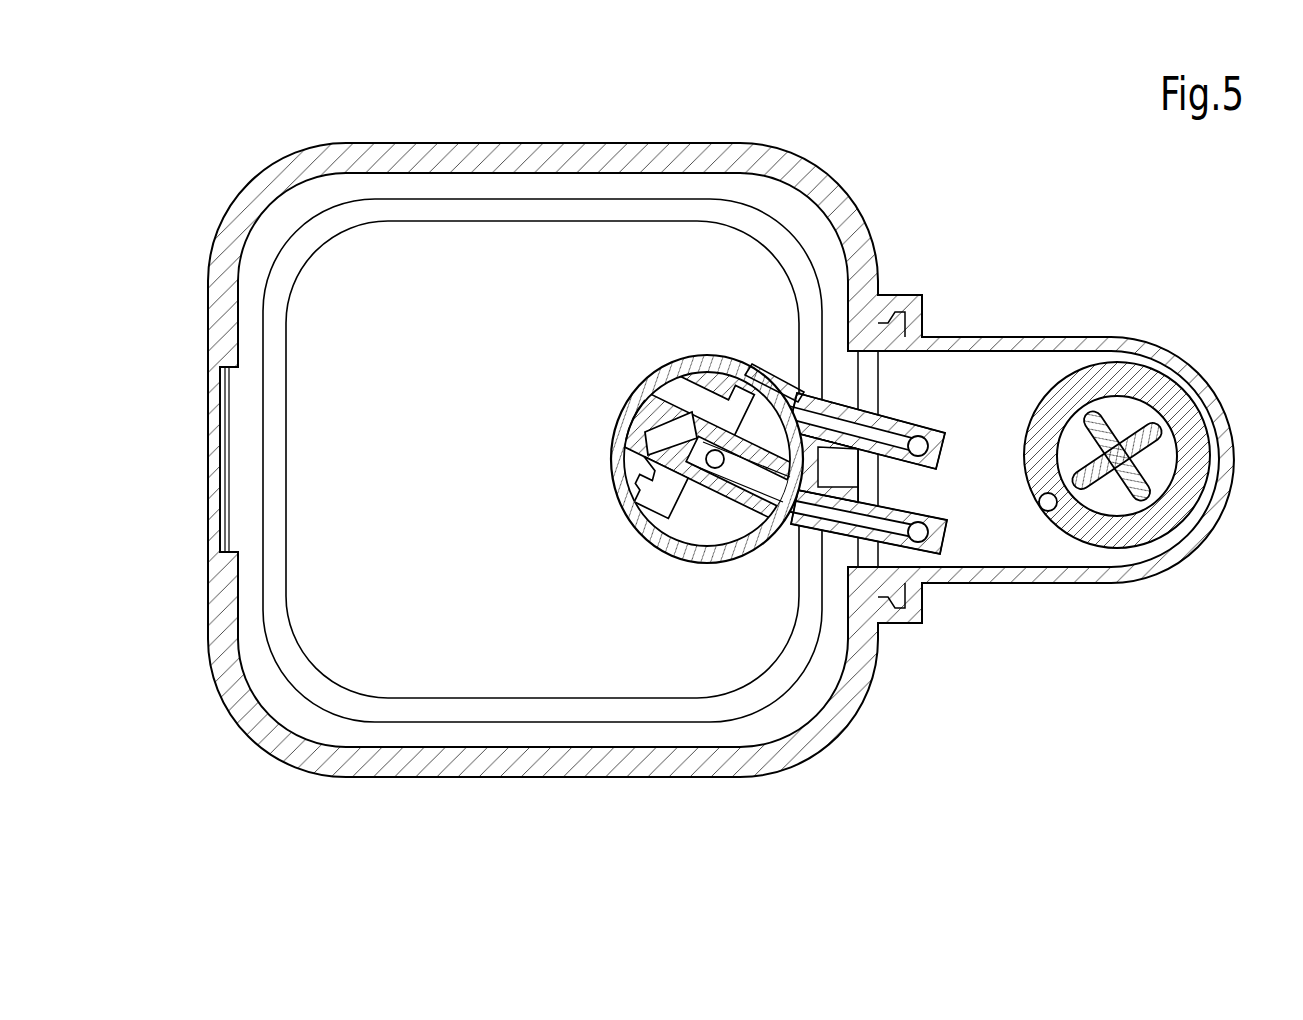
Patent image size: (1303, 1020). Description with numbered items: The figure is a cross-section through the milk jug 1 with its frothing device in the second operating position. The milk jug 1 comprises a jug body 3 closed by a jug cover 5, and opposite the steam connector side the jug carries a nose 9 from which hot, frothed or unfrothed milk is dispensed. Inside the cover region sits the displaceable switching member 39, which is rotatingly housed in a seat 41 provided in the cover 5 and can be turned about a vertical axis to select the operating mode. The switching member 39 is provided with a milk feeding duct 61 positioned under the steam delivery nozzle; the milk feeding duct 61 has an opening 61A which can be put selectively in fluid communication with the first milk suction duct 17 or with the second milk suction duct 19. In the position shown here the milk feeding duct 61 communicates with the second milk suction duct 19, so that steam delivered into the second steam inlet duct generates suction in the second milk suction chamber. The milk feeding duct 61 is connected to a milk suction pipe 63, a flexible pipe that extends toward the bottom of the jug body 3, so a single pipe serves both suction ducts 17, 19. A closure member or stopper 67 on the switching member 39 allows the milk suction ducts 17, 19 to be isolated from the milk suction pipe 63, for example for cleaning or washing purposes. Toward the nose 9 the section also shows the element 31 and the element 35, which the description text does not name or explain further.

The milk jug 1 is at (919, 146).
The jug body 3 is at (389, 438).
The jug cover 5 is at (505, 157).
The nose 9 is at (1144, 302).
The first milk suction duct 17 is at (875, 432).
The second milk suction duct 19 is at (915, 536).
The cam disc 31 is at (1120, 405).
The pin 35 is at (1047, 512).
The switching member 39 is at (717, 410).
The seat 41 is at (767, 376).
The milk feeding duct 61 is at (748, 498).
The opening 61A is at (742, 478).
The milk suction pipe 63 is at (716, 451).
The closure member or stopper 67 is at (660, 396).